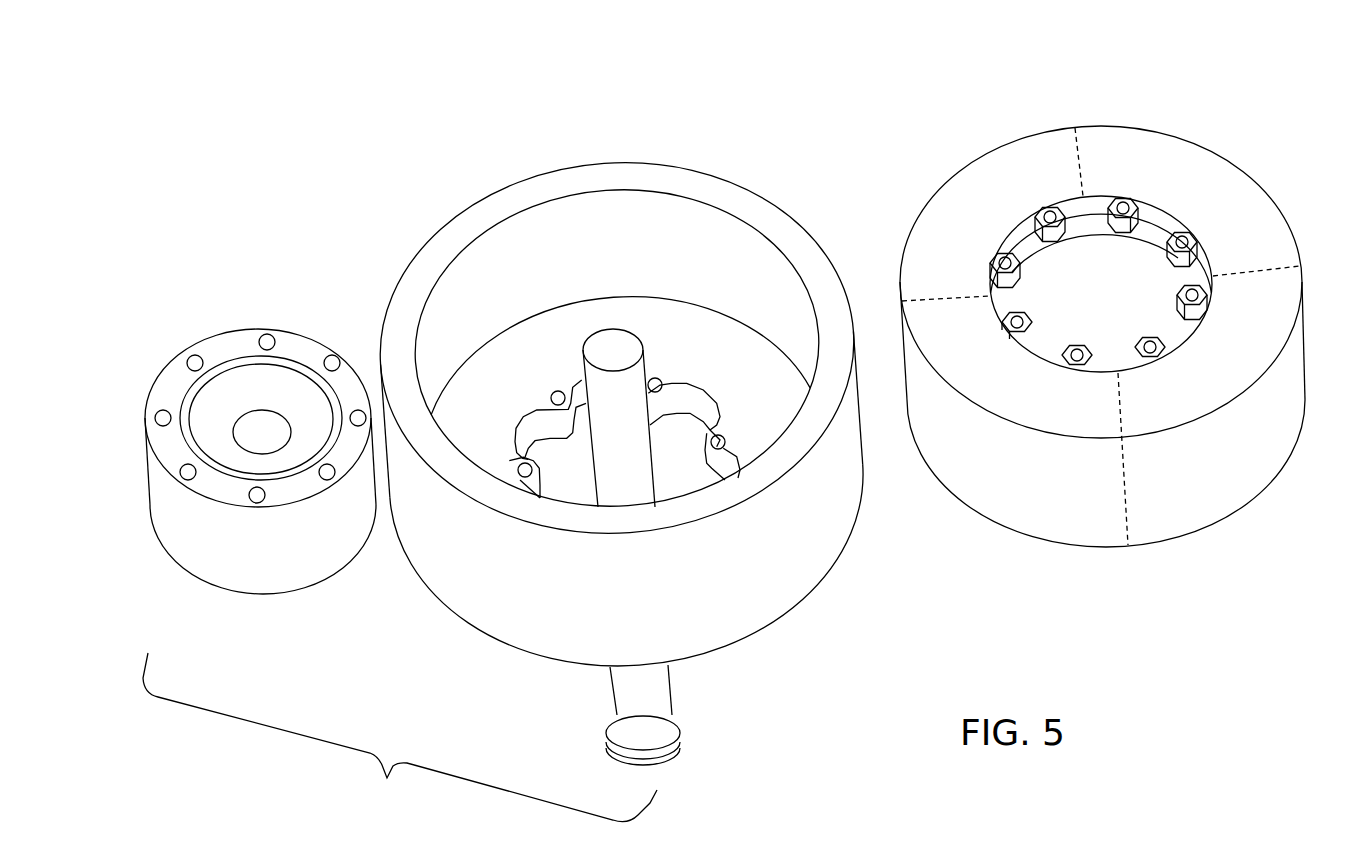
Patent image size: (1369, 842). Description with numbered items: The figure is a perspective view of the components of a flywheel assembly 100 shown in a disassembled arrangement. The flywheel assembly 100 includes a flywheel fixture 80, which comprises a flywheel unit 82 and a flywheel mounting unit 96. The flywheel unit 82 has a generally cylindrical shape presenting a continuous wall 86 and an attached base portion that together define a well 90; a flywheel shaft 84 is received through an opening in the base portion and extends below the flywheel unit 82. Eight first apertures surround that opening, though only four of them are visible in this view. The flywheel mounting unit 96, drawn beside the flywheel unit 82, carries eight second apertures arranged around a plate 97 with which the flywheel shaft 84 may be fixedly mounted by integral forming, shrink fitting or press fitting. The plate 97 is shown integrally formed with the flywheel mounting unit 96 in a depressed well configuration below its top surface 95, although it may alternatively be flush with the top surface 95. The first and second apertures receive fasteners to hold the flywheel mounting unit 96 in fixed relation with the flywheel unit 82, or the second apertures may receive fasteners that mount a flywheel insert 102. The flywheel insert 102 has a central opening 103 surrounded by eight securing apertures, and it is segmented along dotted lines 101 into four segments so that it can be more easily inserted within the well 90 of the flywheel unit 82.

The flywheel fixture 80 is at (392, 823).
The flywheel unit 82 is at (494, 189).
The flywheel shaft 84 is at (670, 678).
The continuous wall 86 is at (607, 172).
The well 90 is at (692, 225).
The top surface 95 is at (160, 396).
The flywheel mounting unit 96 is at (220, 587).
The plate 97 is at (190, 396).
The flywheel assembly 100 is at (1167, 663).
The dotted lines 101 is at (1083, 172).
The flywheel insert 102 is at (1025, 568).
The opening 103 is at (1153, 318).